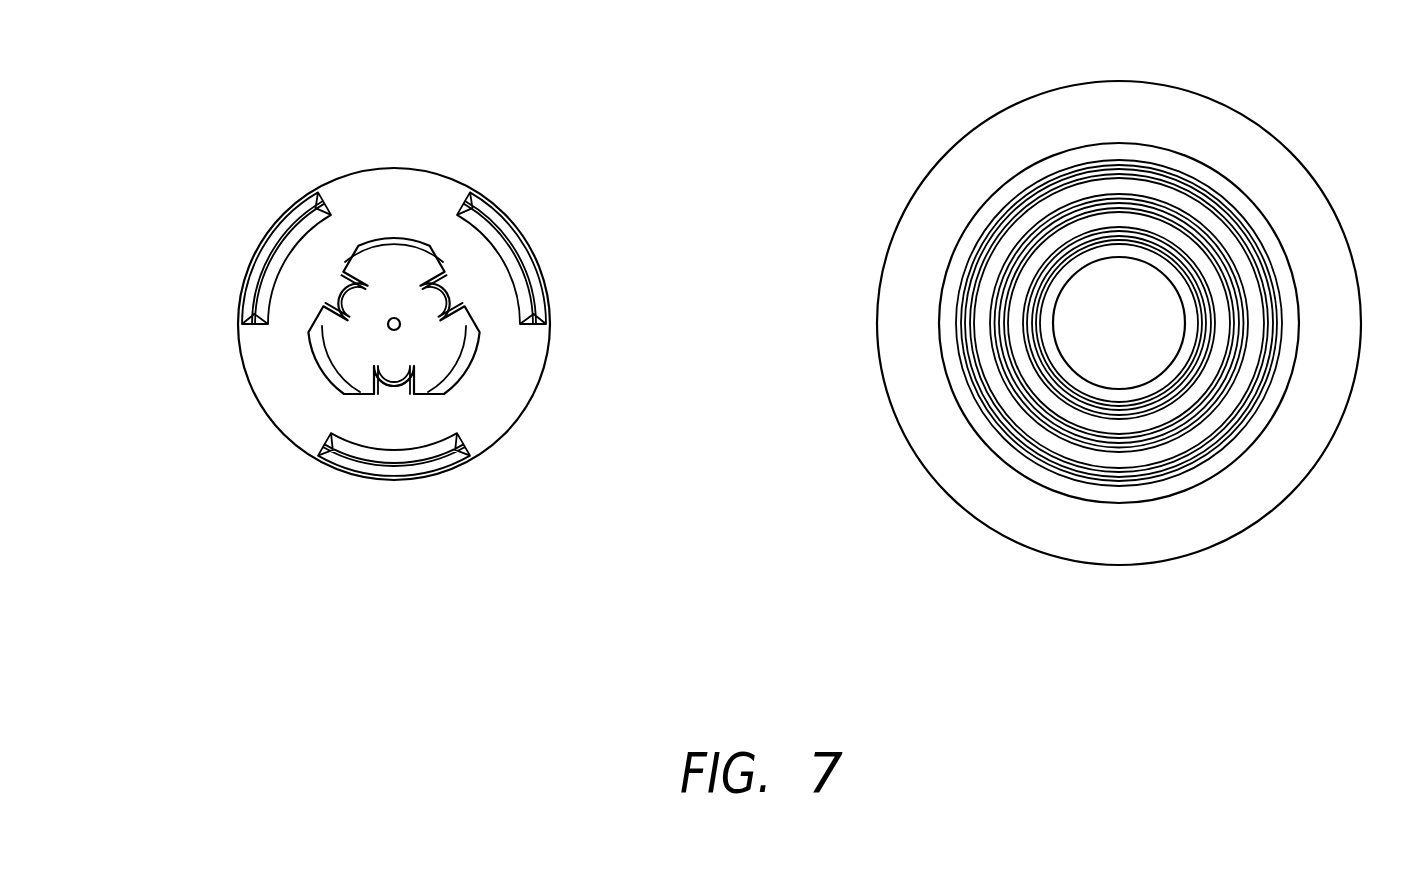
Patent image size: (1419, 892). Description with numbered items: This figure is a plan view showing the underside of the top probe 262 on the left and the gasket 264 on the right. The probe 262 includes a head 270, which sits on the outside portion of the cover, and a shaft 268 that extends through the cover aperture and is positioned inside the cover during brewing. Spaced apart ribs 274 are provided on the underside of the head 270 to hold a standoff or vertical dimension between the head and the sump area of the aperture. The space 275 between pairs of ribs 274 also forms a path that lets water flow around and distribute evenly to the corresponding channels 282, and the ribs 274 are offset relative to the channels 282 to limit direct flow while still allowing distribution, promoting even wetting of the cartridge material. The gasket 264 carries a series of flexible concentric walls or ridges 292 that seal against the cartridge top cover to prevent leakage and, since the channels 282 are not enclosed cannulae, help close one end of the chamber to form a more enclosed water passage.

The top probe 262 is at (381, 348).
The gasket 264 is at (1117, 365).
The shaft 268 is at (462, 362).
The head 270 is at (280, 390).
The ribs 274 is at (268, 250).
The space between pairs of ribs 275 is at (395, 181).
The channels 282 is at (392, 370).
The concentric ridges 292 is at (1080, 243).